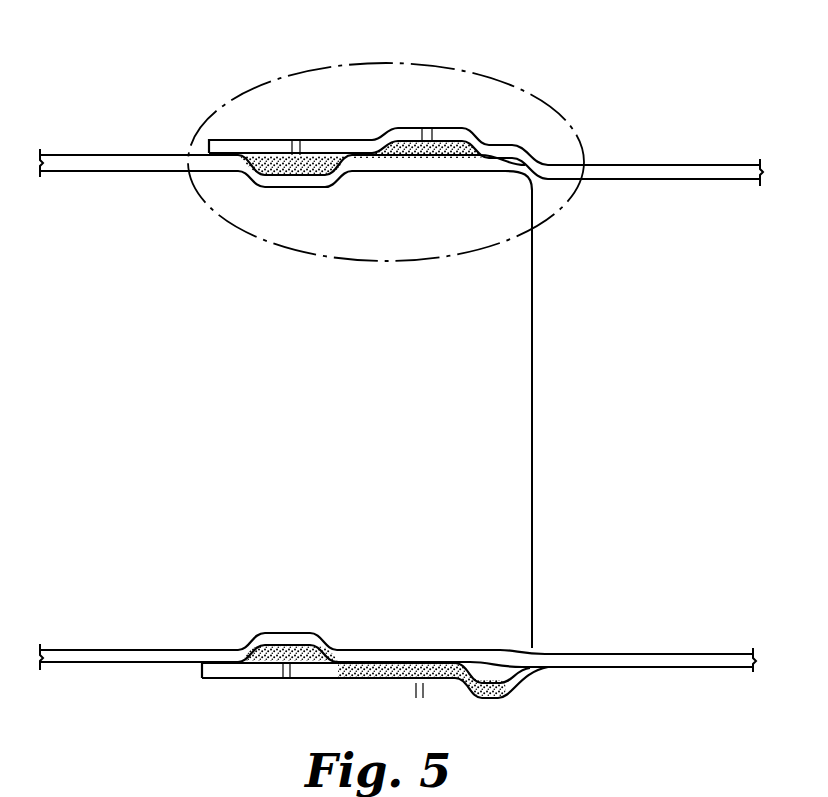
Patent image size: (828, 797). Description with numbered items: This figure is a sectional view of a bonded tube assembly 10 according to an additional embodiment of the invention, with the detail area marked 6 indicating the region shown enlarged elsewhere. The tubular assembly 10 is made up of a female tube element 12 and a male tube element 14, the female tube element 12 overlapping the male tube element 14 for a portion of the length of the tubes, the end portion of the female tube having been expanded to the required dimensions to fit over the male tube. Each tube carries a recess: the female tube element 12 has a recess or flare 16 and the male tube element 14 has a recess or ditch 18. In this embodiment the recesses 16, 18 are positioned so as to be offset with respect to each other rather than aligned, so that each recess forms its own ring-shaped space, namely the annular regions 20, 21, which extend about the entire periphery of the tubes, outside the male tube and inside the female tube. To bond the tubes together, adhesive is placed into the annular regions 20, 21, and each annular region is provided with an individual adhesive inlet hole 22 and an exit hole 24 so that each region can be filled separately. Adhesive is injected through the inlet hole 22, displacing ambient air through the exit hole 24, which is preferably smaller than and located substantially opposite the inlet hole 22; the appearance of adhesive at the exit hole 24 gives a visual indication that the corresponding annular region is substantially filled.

The detail view area (FIG. 6) 6 is at (460, 62).
The tubular assembly 10 is at (401, 405).
The female tube element 12 is at (674, 174).
The male tube element 14 is at (96, 166).
The recess or flare 16 is at (452, 133).
The recess or ditch 18 is at (272, 184).
The annular region 20 is at (439, 154).
The annular region 21 is at (318, 173).
The adhesive inlet hole 22 is at (291, 148).
The exit hole 24 is at (283, 676).